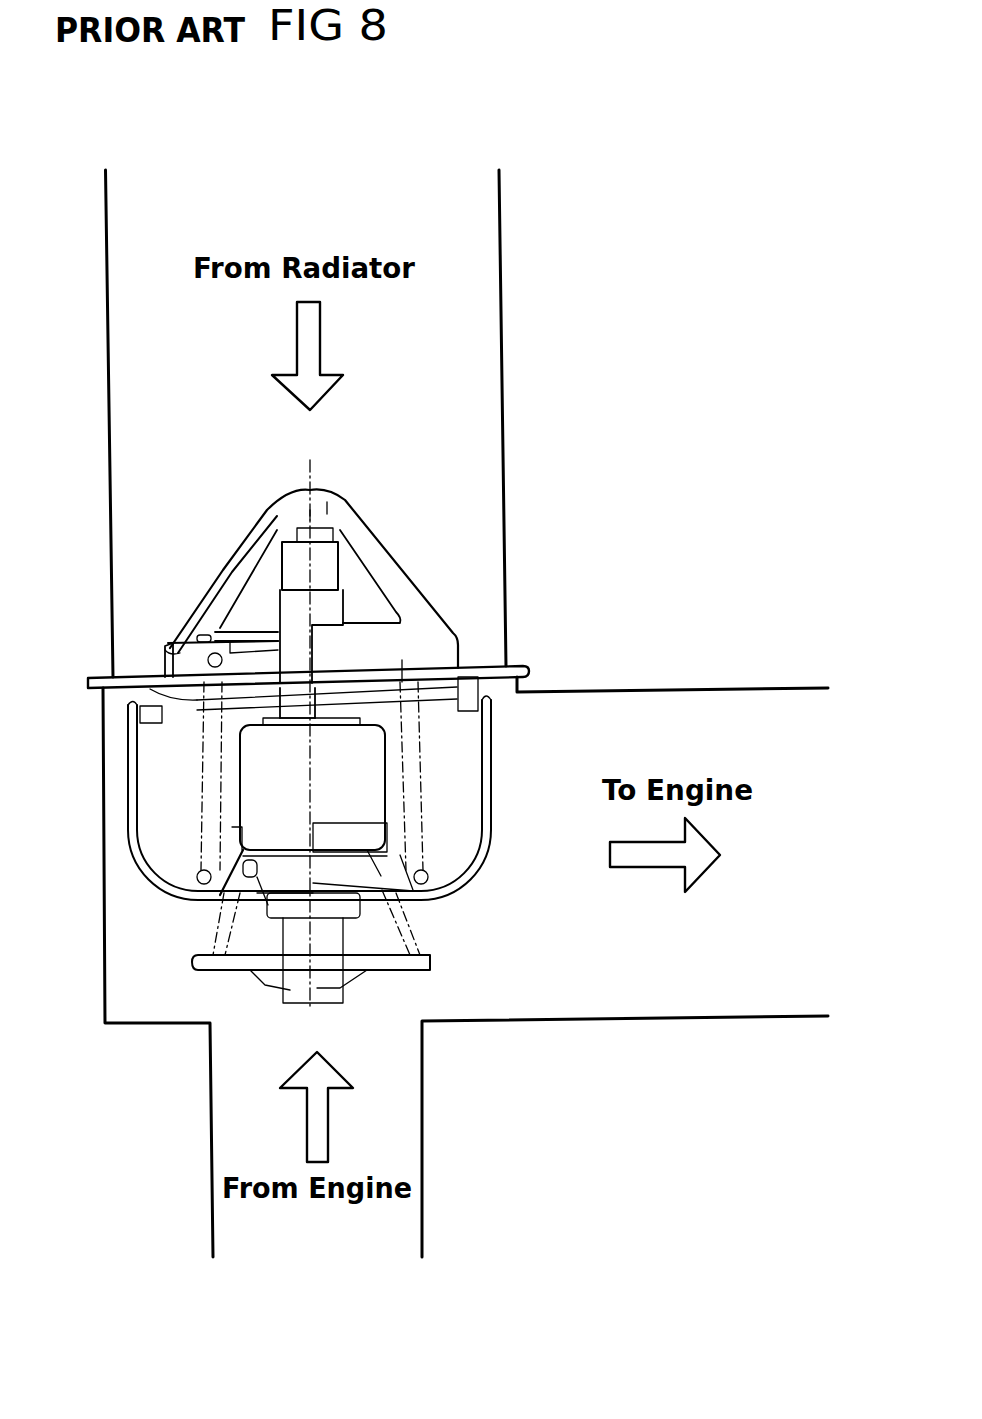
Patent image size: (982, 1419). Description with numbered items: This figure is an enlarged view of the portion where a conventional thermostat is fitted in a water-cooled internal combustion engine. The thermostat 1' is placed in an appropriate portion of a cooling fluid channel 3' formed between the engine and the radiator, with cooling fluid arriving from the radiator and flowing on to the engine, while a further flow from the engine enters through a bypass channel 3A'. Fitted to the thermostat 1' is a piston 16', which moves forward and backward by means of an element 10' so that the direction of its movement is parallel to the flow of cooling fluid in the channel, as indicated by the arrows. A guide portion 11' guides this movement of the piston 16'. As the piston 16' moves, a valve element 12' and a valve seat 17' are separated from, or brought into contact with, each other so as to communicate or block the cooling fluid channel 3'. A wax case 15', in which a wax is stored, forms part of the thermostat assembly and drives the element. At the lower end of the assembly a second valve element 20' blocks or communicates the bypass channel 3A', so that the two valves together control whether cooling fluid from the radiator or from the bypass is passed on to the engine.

The cooling fluid channel 3' is at (467, 437).
The bypass channel 3A' is at (461, 972).
The thermostat 1' is at (311, 543).
The piston 16' is at (250, 493).
The guide portion 11' is at (242, 613).
The valve element 12' is at (166, 617).
The valve seat 17' is at (111, 668).
The element 10' is at (273, 693).
The wax case 15' is at (222, 860).
The second valve element 20' is at (280, 1021).